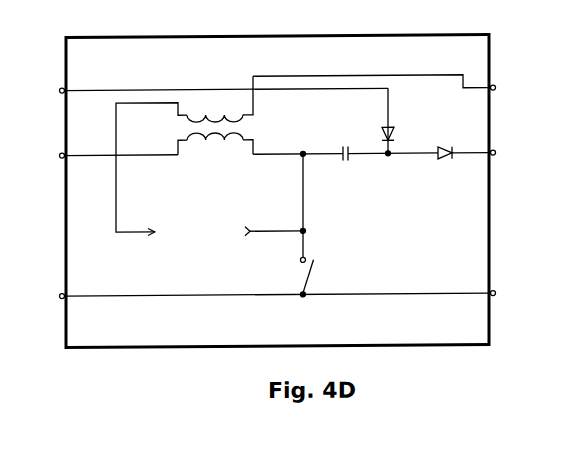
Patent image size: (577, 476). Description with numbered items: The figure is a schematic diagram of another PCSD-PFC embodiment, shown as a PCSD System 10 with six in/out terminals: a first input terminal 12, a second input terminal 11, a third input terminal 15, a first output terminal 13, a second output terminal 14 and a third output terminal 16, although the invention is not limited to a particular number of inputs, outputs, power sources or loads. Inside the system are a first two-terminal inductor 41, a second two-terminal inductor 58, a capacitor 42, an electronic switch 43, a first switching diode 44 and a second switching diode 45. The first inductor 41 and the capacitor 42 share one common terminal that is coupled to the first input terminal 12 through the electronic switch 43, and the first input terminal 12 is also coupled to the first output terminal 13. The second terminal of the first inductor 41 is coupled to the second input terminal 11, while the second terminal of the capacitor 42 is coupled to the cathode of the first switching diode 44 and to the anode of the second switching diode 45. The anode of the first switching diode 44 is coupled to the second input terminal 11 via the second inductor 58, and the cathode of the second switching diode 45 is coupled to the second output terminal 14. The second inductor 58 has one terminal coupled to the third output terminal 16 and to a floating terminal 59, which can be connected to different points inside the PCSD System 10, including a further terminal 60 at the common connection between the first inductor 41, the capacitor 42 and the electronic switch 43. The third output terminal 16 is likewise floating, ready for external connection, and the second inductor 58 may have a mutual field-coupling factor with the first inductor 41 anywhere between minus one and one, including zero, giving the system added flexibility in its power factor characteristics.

The PCSD System 10 is at (76, 30).
The third input terminal Vin2 15 is at (59, 95).
The second input terminal Vin1 11 is at (59, 173).
The first input terminal Vin0 12 is at (59, 315).
The third output terminal Vout2 16 is at (500, 94).
The second output terminal Vout1 14 is at (499, 169).
The first output terminal Vout0 13 is at (499, 313).
The second two-terminal inductor L2 58 is at (176, 116).
The first two-terminal inductor L1 41 is at (176, 169).
The floating terminal M 59 is at (146, 248).
The terminal F 60 is at (229, 250).
The electronic switch SW1 43 is at (324, 254).
The capacitor C1 42 is at (336, 149).
The first switching diode D1 44 is at (397, 137).
The second switching diode D2 45 is at (435, 163).